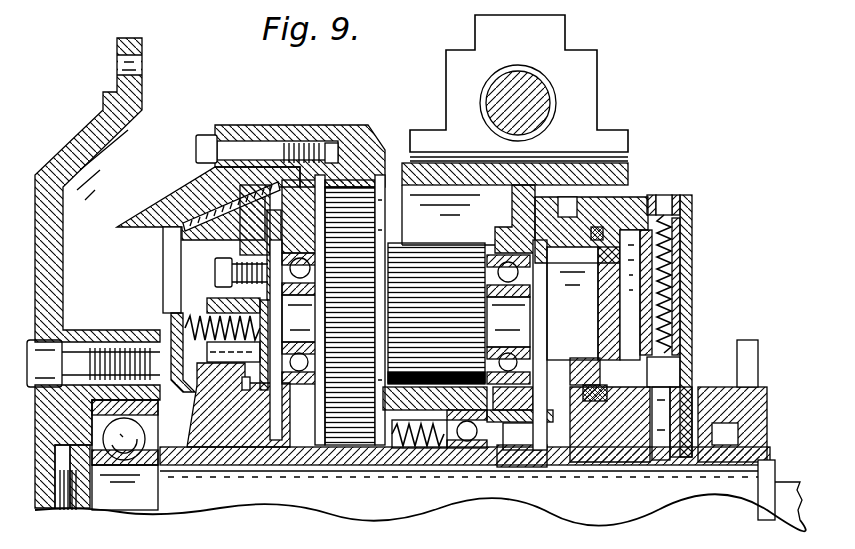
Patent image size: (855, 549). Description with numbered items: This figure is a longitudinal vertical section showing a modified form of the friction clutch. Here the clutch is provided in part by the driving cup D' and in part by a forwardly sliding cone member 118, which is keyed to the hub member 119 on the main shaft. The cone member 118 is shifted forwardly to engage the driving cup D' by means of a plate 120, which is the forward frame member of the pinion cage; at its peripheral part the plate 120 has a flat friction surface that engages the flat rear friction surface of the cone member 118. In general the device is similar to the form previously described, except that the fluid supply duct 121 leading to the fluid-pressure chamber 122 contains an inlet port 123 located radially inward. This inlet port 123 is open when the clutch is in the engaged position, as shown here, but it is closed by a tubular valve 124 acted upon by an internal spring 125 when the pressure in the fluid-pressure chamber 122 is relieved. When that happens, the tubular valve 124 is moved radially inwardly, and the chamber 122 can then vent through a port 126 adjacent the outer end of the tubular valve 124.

The cone member 118 is at (232, 226).
The hub member 119 is at (222, 441).
The plate 120 is at (286, 200).
The fluid supply duct 121 is at (670, 372).
The fluid-pressure chamber 122 is at (628, 292).
The inlet port 123 is at (626, 353).
The tubular valve 124 is at (678, 267).
The internal spring 125 is at (670, 318).
The port 126 is at (667, 200).
The driving cup D' is at (172, 276).